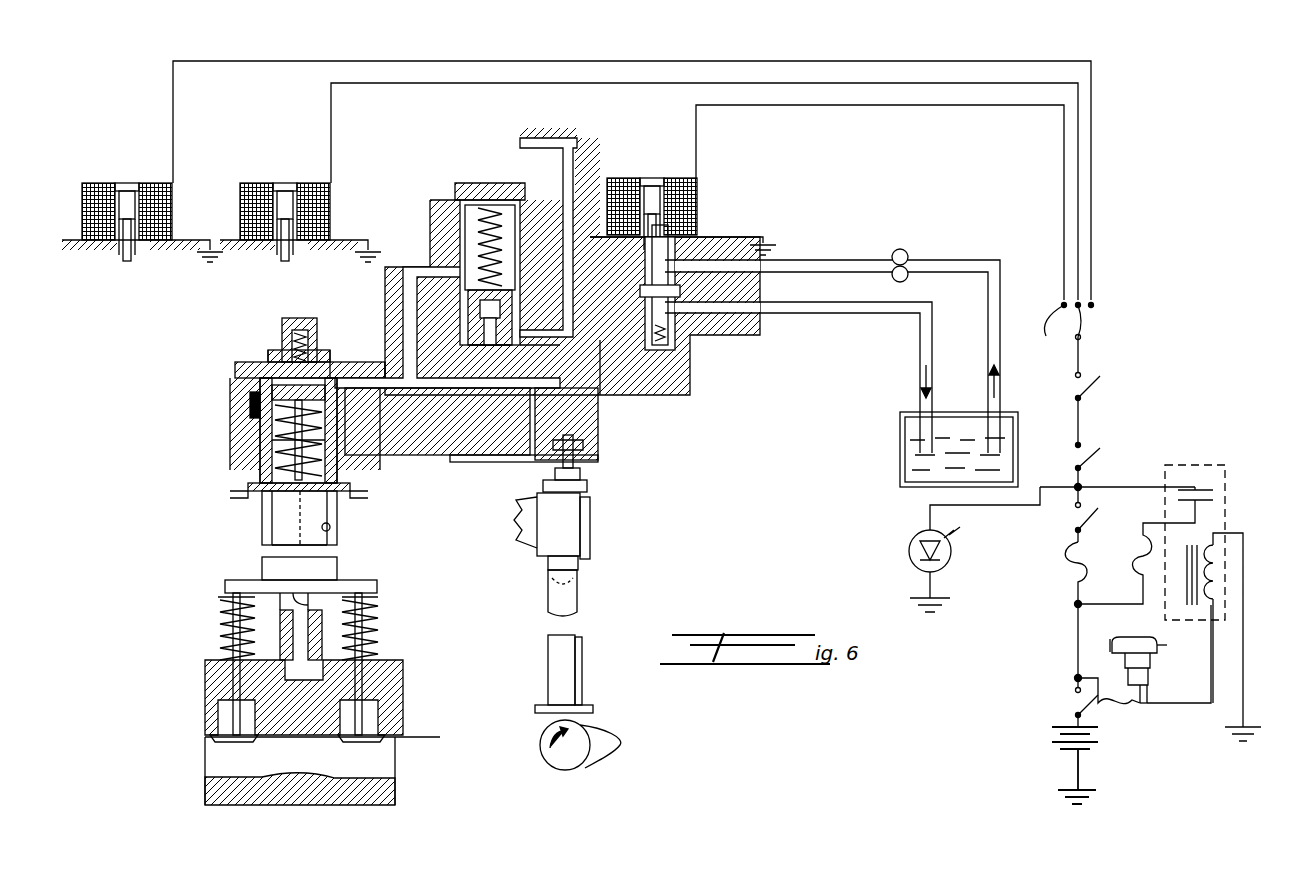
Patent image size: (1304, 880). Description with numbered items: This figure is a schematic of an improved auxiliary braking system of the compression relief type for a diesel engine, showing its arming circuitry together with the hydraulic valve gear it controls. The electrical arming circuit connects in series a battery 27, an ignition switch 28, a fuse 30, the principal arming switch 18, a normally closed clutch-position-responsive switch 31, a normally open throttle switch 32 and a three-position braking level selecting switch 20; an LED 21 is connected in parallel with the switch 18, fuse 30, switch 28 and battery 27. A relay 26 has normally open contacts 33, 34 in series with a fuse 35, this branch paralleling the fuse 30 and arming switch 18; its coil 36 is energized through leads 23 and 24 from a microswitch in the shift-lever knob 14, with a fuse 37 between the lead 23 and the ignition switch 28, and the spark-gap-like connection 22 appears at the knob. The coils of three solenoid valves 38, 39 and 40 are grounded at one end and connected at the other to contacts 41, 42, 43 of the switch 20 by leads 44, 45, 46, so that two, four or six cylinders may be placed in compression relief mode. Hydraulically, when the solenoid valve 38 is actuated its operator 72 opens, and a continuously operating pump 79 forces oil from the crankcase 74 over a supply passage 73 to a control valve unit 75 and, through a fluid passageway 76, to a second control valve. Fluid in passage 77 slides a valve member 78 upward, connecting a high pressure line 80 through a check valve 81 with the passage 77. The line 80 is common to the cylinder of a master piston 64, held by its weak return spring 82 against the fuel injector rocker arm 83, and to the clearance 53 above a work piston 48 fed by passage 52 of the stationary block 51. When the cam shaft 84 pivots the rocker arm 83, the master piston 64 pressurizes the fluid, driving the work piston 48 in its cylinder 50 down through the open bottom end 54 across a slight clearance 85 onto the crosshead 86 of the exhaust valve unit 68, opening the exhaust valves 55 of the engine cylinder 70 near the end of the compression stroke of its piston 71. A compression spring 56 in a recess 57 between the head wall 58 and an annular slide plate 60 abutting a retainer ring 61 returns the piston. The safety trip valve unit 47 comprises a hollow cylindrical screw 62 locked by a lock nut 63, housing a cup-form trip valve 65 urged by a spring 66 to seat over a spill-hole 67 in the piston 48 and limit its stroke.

The knob 14 is at (1142, 637).
The principal arming switch 18 is at (1072, 516).
The braking level selecting switch 20 is at (1087, 326).
The LED 21 is at (908, 551).
The spark gap 22 is at (1157, 645).
The lead 23 is at (1142, 705).
The lead 24 is at (1180, 704).
The relay 26 is at (1226, 464).
The battery 27 is at (1054, 740).
The ignition switch 28 is at (1074, 690).
The fuse 30 is at (1066, 556).
The clutch-position-responsive switch 31 is at (1105, 447).
The throttle switch 32 is at (1105, 387).
The relay contact 33 is at (1214, 490).
The relay contact 34 is at (1214, 500).
The fuse 35 is at (1142, 552).
The coil 36 is at (1222, 576).
The fuse 37 is at (1118, 706).
The solenoid valve 38 is at (720, 211).
The solenoid valve 39 is at (352, 209).
The solenoid valve 40 is at (192, 207).
The contact 41 is at (1064, 300).
The contact 42 is at (1078, 300).
The contact 43 is at (1091, 303).
The lead 44 is at (948, 105).
The lead 45 is at (905, 83).
The lead 46 is at (858, 61).
The safety trip valve unit 47 is at (248, 340).
The work piston 48 is at (262, 421).
The cylinder 50 is at (250, 466).
The block 51 is at (331, 362).
The passage 52 is at (387, 377).
The clearance 53 is at (270, 367).
The open bottom end 54 is at (262, 520).
The exhaust valve 55 is at (232, 716).
The compression spring 56 is at (275, 441).
The recess 57 is at (337, 533).
The head wall 58 is at (330, 441).
The annular slide plate 60 is at (330, 502).
The retainer ring 61 is at (248, 498).
The cylindrical screw 62 is at (288, 320).
The lock nut 63 is at (318, 328).
The master piston 64 is at (598, 440).
The trip valve 65 is at (278, 356).
The spring 66 is at (280, 326).
The spill-hole 67 is at (252, 395).
The exhaust valve unit 68 is at (362, 582).
The cylinder 70 is at (385, 753).
The piston 71 is at (385, 791).
The operator 72 is at (668, 320).
The supply passage 73 is at (980, 259).
The crankcase 74 is at (905, 471).
The control valve unit 75 is at (485, 168).
The fluid passageway 76 is at (578, 164).
The passage 77 is at (612, 345).
The valve member 78 is at (560, 345).
The pump 79 is at (905, 249).
The high pressure line 80 is at (410, 268).
The check valve 81 is at (482, 322).
The return spring 82 is at (512, 459).
The fuel injector rocker arm 83 is at (591, 526).
The cam shaft 84 is at (590, 766).
The clearance 85 is at (285, 536).
The crosshead 86 is at (272, 559).